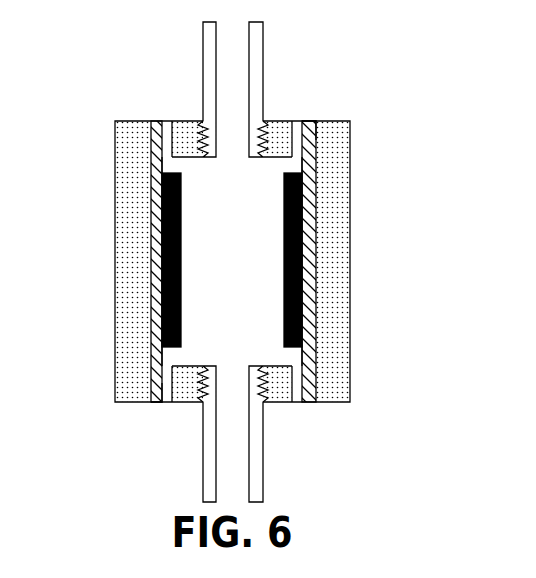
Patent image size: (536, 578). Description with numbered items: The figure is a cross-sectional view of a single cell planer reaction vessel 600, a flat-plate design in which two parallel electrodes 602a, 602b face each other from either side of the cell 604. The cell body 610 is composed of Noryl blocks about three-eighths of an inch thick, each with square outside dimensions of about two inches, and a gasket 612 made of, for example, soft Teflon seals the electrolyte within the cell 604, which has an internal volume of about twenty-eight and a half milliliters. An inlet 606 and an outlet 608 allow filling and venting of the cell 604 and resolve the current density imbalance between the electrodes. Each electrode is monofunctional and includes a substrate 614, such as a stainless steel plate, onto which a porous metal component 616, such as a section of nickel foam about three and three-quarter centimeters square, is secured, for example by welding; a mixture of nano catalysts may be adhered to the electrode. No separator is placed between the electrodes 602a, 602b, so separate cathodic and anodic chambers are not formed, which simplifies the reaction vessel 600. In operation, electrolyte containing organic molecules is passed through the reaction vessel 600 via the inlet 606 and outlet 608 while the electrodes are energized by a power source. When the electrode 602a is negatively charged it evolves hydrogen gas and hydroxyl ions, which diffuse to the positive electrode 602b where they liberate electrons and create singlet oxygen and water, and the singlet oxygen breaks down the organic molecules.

The planer reaction vessel 600 is at (273, 262).
The electrode 602a is at (268, 232).
The positive electrode 602b is at (192, 308).
The cell 604 is at (214, 344).
The inlet 606 is at (232, 484).
The outlet 608 is at (232, 32).
The cell body 610 is at (332, 350).
The gasket 612 is at (298, 121).
The substrate 614 is at (310, 125).
The porous metal component 616 is at (160, 250).